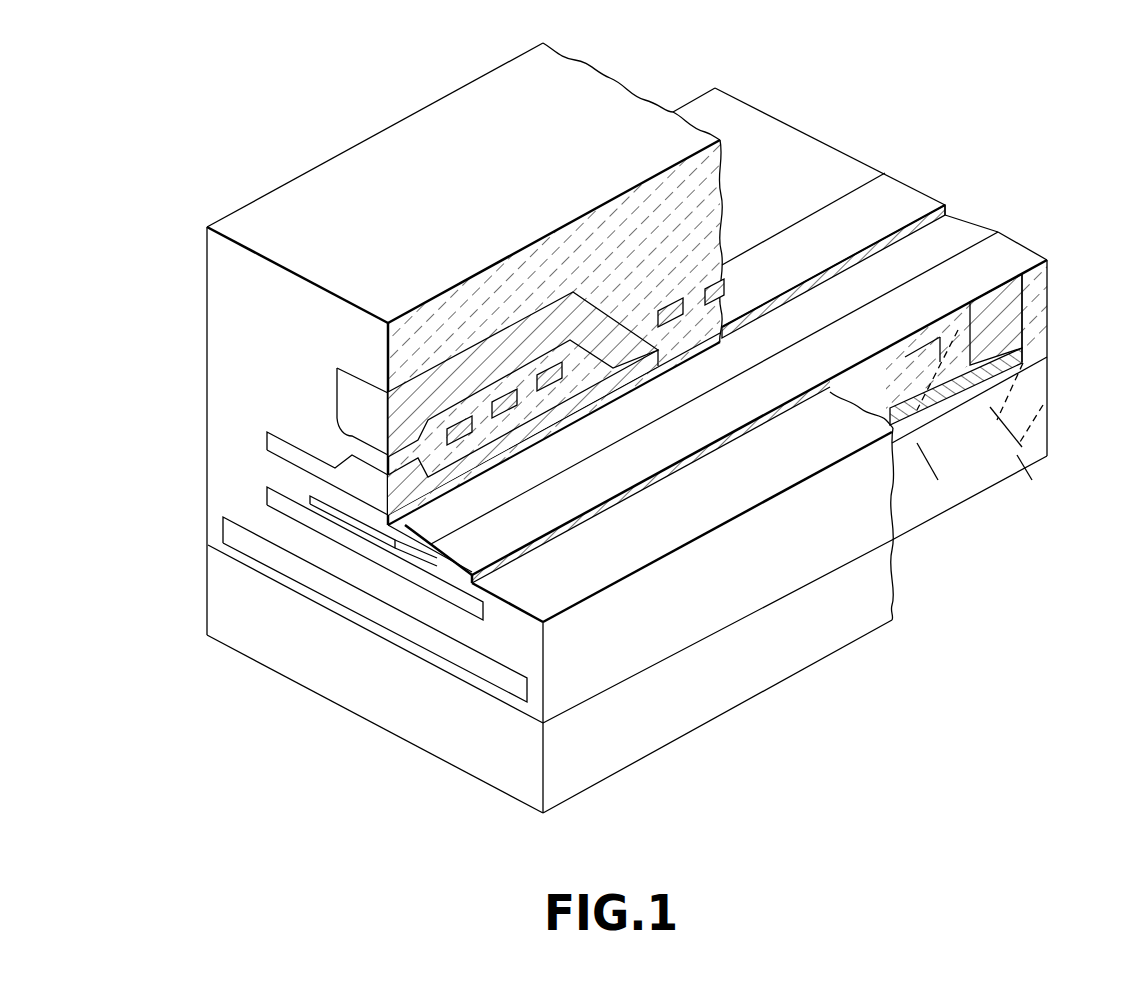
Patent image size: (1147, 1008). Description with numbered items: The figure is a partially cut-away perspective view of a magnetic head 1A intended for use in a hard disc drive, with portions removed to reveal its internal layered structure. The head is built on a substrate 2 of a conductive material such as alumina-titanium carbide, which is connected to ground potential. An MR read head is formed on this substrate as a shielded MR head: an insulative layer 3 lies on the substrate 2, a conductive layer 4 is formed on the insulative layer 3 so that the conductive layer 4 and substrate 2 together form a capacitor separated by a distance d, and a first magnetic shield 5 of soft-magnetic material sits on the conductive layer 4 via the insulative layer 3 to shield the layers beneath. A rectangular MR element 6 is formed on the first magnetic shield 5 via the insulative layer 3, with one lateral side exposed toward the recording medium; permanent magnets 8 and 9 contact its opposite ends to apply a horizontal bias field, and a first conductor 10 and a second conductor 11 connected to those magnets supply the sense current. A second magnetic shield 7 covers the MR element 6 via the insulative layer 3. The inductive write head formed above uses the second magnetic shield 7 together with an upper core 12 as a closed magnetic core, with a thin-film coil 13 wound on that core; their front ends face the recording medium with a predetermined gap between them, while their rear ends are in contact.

The magnetic head 1A is at (248, 166).
The substrate 2 is at (226, 598).
The insulative layer 3 is at (226, 298).
The conductive layer 4 is at (236, 540).
The first magnetic shield 5 is at (236, 493).
The MR element 6 is at (397, 540).
The second magnetic shield 7 is at (266, 440).
The permanent magnet 8 is at (463, 557).
The permanent magnet 9 is at (347, 516).
The first conductor 10 is at (970, 255).
The second conductor 11 is at (860, 200).
The upper core 12 is at (350, 395).
The thin-film coil 13 is at (455, 425).